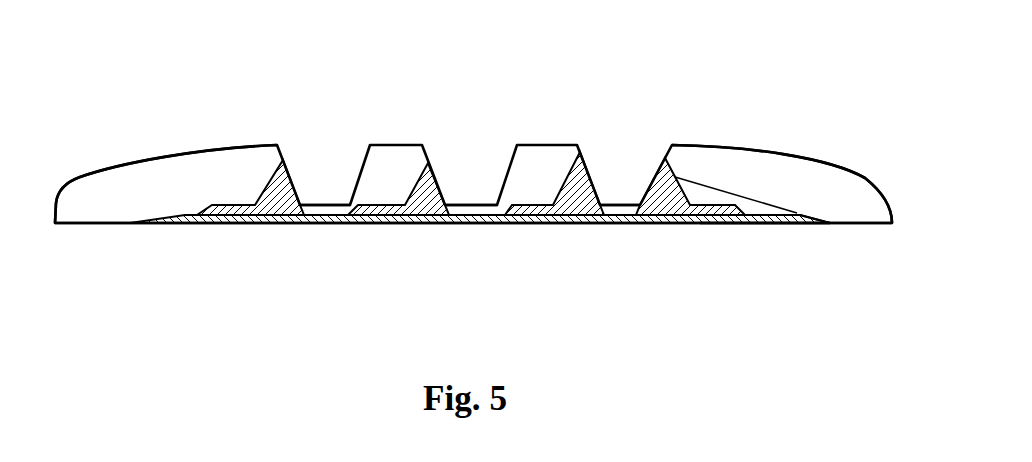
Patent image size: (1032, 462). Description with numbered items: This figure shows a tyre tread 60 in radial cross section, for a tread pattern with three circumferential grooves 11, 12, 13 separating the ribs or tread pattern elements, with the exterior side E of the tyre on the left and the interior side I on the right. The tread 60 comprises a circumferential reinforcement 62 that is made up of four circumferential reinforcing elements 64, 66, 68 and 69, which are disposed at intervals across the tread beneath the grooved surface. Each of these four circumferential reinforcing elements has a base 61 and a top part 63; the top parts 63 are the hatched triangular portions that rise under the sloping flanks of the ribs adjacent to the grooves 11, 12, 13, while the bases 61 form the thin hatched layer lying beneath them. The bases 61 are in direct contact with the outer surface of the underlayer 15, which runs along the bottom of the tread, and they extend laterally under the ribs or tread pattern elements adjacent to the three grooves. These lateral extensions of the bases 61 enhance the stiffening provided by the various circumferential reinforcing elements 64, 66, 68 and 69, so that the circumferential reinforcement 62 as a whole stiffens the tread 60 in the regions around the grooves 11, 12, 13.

The tread 60 is at (312, 120).
The first recess 11 is at (320, 185).
The second recess 12 is at (465, 193).
The third recess 13 is at (630, 190).
The exterior side E is at (108, 162).
The interior side I is at (857, 160).
The top part 63 is at (273, 189).
The base 61 is at (243, 214).
The circumferential reinforcing element 66 is at (270, 203).
The circumferential reinforcing element 64 is at (418, 207).
The circumferential reinforcing element 68 is at (592, 216).
The underlayer 15 is at (737, 223).
The circumferential reinforcing element 69 is at (813, 220).
The circumferential reinforcement 62 is at (440, 247).